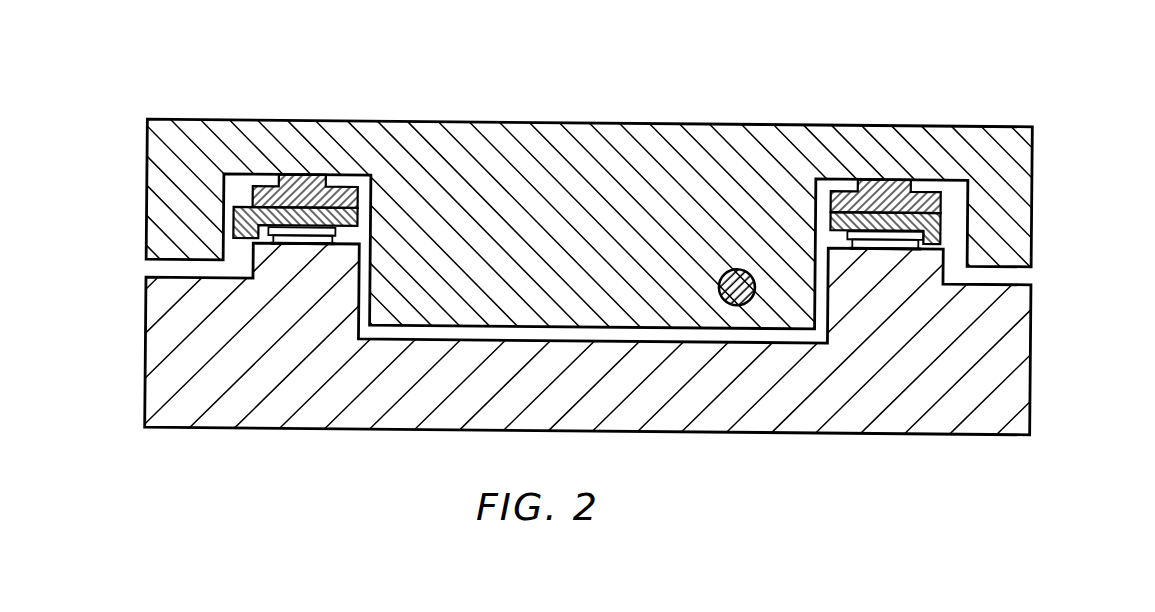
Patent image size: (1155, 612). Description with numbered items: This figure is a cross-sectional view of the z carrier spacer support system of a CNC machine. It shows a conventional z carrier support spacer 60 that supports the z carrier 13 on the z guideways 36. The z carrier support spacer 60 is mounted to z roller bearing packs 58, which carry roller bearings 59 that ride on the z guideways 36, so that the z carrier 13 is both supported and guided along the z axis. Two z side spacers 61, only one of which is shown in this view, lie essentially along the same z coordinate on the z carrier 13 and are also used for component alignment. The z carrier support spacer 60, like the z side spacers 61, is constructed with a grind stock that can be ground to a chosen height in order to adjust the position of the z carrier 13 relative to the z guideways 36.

The z carrier 13 is at (952, 123).
The z guideways 36 is at (1031, 413).
The z roller bearing packs 58 is at (252, 248).
The roller bearings 59 is at (294, 249).
The z carrier support spacer 60 is at (322, 178).
The z side spacers 61 is at (210, 247).